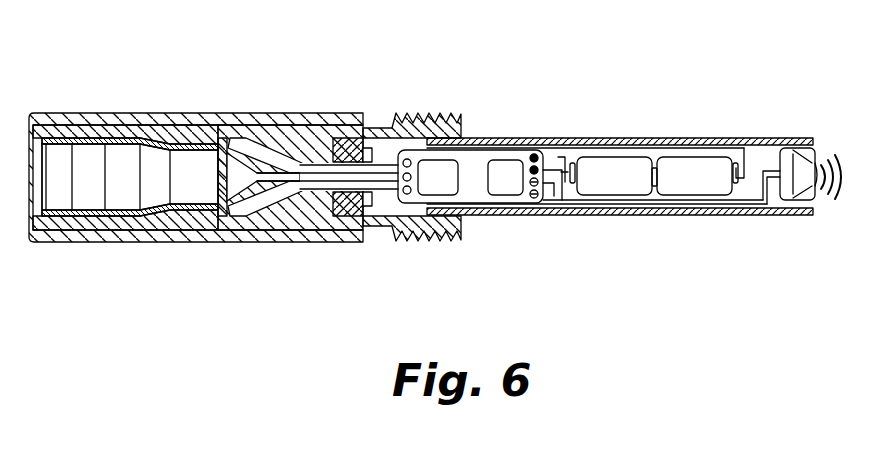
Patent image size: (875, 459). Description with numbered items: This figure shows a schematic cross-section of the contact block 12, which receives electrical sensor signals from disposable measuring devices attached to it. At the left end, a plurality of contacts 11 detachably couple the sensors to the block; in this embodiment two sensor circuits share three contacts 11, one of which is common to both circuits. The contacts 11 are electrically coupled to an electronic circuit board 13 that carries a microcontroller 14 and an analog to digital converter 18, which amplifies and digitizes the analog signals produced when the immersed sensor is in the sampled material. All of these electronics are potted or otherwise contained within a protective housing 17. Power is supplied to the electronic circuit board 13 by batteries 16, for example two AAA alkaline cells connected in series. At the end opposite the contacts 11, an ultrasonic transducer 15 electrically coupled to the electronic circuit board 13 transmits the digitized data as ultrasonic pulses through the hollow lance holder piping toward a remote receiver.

The contacts 11 is at (58, 198).
The contact block 12 is at (160, 74).
The electronic circuit board 13 is at (470, 158).
The microcontroller 14 is at (513, 172).
The ultrasonic transducer 15 is at (803, 150).
The batteries 16 is at (702, 160).
The protective housing 17 is at (660, 216).
The analog to digital converter 18 is at (447, 180).